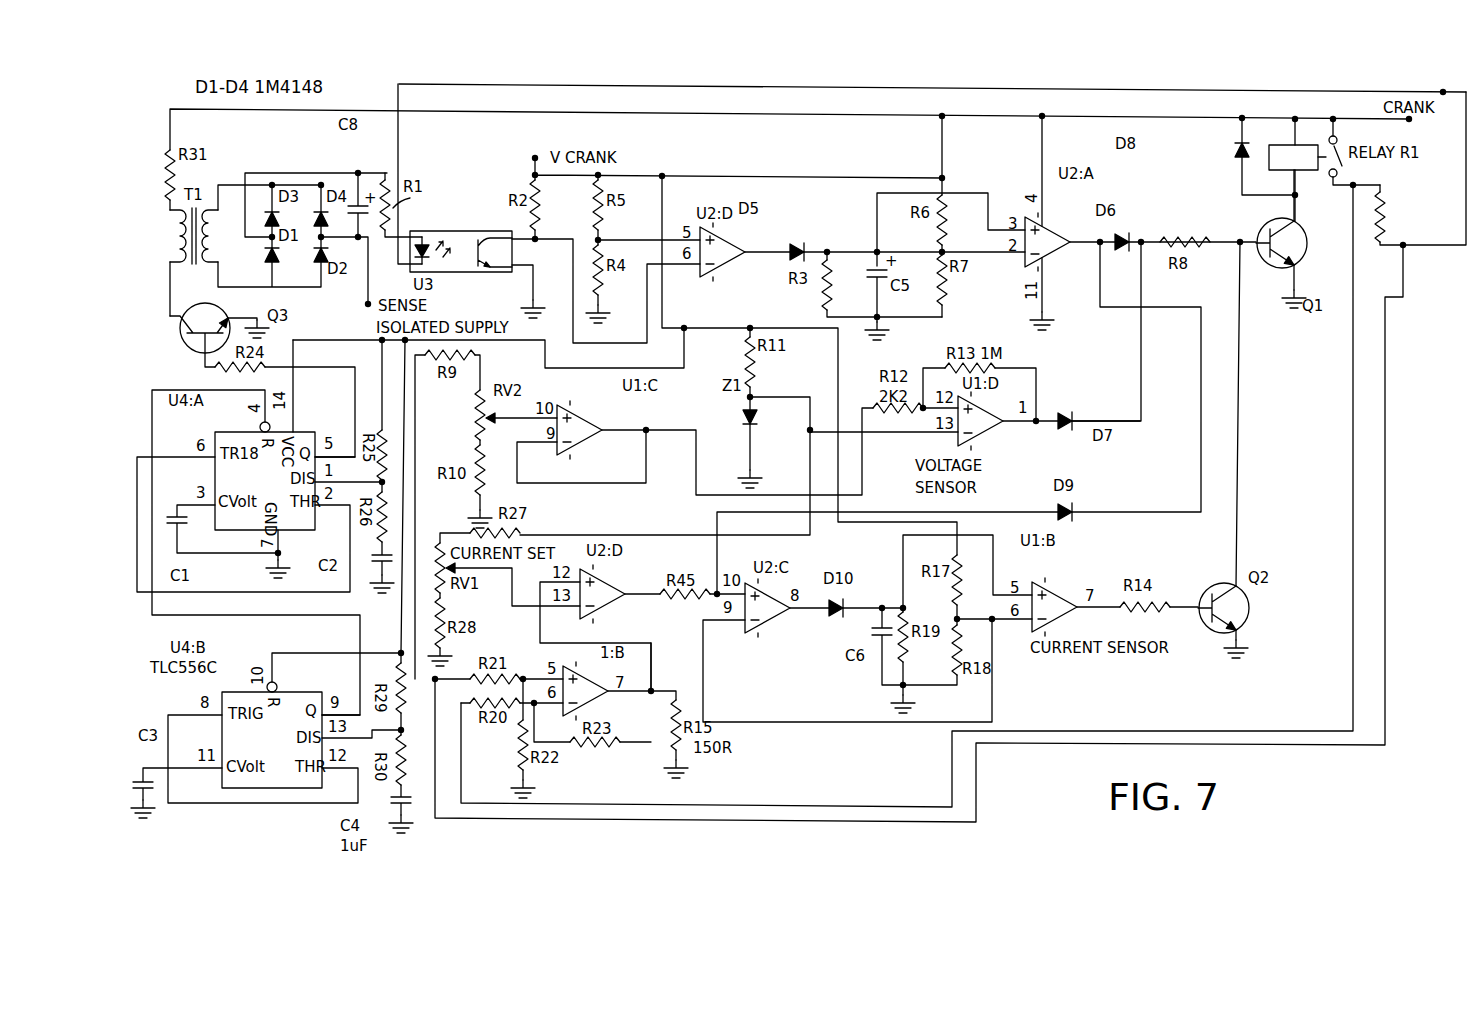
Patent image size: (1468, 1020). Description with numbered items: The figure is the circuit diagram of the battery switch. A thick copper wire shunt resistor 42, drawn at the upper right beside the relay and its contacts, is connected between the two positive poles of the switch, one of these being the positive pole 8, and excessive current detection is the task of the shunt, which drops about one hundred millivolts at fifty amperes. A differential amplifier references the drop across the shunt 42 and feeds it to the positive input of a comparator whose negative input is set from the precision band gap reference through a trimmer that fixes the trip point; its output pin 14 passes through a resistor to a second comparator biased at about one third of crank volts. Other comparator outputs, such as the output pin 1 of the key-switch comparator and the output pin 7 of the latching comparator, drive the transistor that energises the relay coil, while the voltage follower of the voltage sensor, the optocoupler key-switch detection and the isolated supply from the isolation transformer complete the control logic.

The shunt resistor 42 is at (1378, 216).
The output pin 1 of comparator U2:A 1 is at (1058, 242).
The output pin 7 of comparator U2:D 7 is at (733, 252).
The positive pole 8 is at (590, 430).
The output pin 14 of comparator U2:D 14 is at (616, 594).